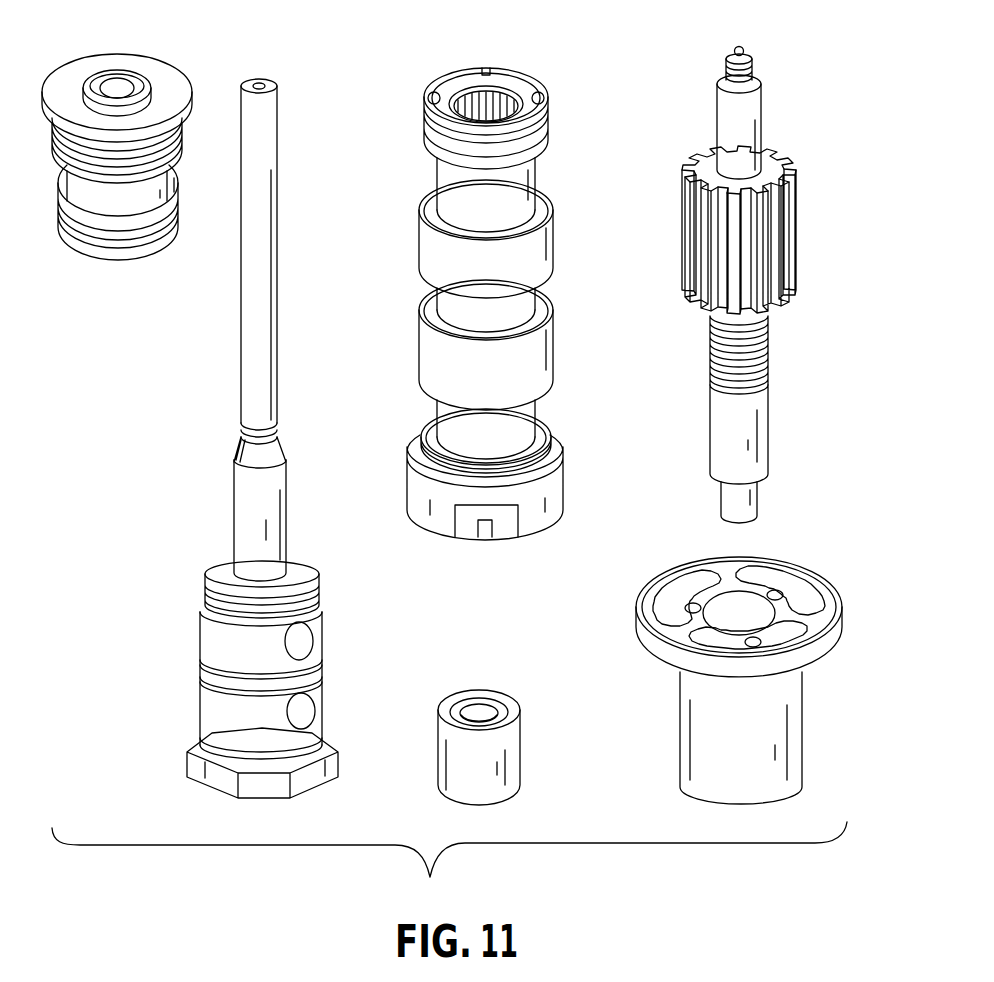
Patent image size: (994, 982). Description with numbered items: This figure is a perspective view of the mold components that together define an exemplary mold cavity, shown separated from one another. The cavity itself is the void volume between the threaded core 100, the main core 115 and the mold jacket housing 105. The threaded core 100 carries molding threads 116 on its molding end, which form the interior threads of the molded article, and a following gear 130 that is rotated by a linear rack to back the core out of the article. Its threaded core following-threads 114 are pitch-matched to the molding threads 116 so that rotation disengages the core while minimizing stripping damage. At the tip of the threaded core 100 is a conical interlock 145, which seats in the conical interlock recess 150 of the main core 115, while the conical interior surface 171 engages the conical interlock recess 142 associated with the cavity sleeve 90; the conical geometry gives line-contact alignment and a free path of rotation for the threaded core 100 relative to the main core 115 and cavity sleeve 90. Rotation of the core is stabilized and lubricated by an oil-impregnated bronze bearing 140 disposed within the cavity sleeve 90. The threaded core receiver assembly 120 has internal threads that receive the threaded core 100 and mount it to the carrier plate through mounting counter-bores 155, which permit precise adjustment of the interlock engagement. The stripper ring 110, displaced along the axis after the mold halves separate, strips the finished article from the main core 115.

The cavity sleeve 90 is at (524, 707).
The threaded core 100 is at (768, 410).
The mold jacket housing 105 is at (552, 222).
The stripper ring 110 is at (178, 66).
The threaded core following-threads 114 is at (777, 320).
The main core 115 is at (279, 228).
The molding threads 116 is at (754, 67).
The threaded core receiver assembly 120 is at (801, 704).
The following gear 130 is at (796, 210).
The bronze bearing 140 is at (477, 702).
The conical interlock recess 142 is at (486, 715).
The conical interlock 145 is at (739, 46).
The conical interlock recess 150 is at (266, 78).
The mounting counter-bores 155 is at (806, 612).
The conical interior surface 171 is at (758, 93).